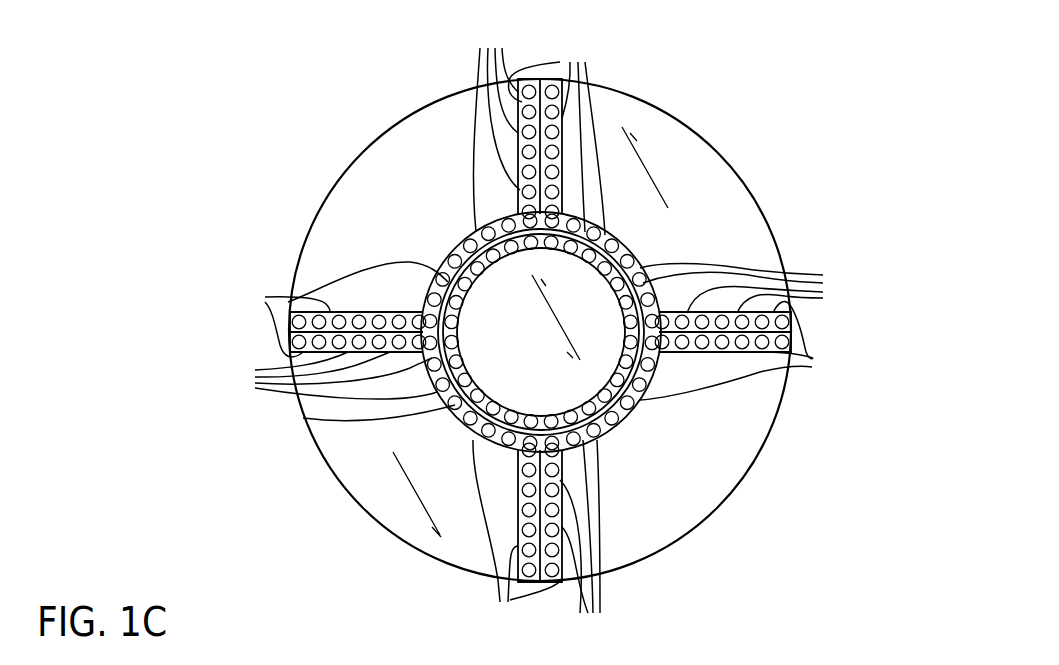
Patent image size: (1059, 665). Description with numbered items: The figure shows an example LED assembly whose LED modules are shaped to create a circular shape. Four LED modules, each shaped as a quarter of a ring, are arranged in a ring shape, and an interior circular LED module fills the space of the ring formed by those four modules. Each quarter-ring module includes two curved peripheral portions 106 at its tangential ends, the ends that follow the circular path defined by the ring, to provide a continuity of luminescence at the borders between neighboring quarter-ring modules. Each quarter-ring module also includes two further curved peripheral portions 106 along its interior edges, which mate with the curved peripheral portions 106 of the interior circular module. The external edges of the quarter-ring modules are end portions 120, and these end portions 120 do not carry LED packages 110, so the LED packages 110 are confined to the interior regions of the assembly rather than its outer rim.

The curved peripheral portion 106 is at (540, 336).
The LED package 110 is at (539, 331).
The end portion 120 is at (340, 175).